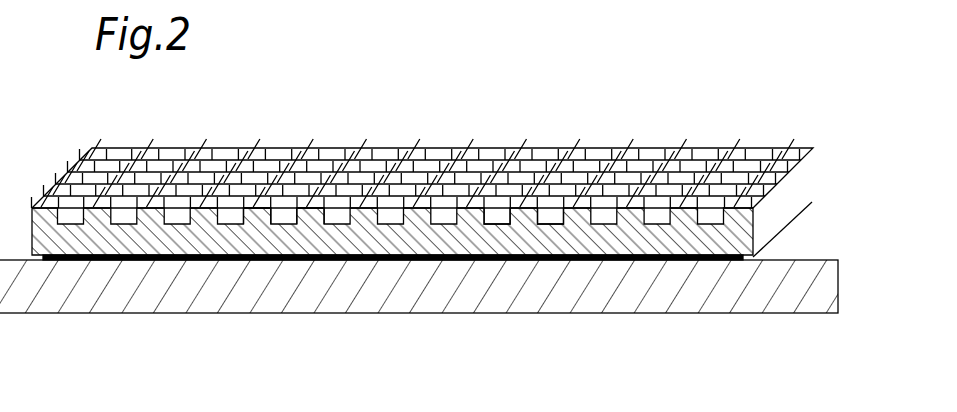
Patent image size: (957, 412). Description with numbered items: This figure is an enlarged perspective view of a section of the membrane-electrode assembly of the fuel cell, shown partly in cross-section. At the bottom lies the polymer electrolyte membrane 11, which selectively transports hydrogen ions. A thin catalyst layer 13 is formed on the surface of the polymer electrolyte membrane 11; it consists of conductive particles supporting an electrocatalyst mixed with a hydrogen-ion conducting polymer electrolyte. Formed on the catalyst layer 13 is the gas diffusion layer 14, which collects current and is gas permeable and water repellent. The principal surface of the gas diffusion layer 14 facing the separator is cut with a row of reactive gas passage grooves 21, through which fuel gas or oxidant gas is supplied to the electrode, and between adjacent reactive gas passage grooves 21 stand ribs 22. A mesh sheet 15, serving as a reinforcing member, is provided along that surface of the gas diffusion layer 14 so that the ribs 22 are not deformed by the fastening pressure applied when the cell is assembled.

The polymer electrolyte membrane 11 is at (117, 298).
The catalyst layer 13 is at (700, 258).
The gas diffusion layer 14 is at (415, 228).
The mesh sheet 15 is at (73, 168).
The reactive gas passage grooves 21 is at (550, 213).
The ribs 22 is at (317, 217).